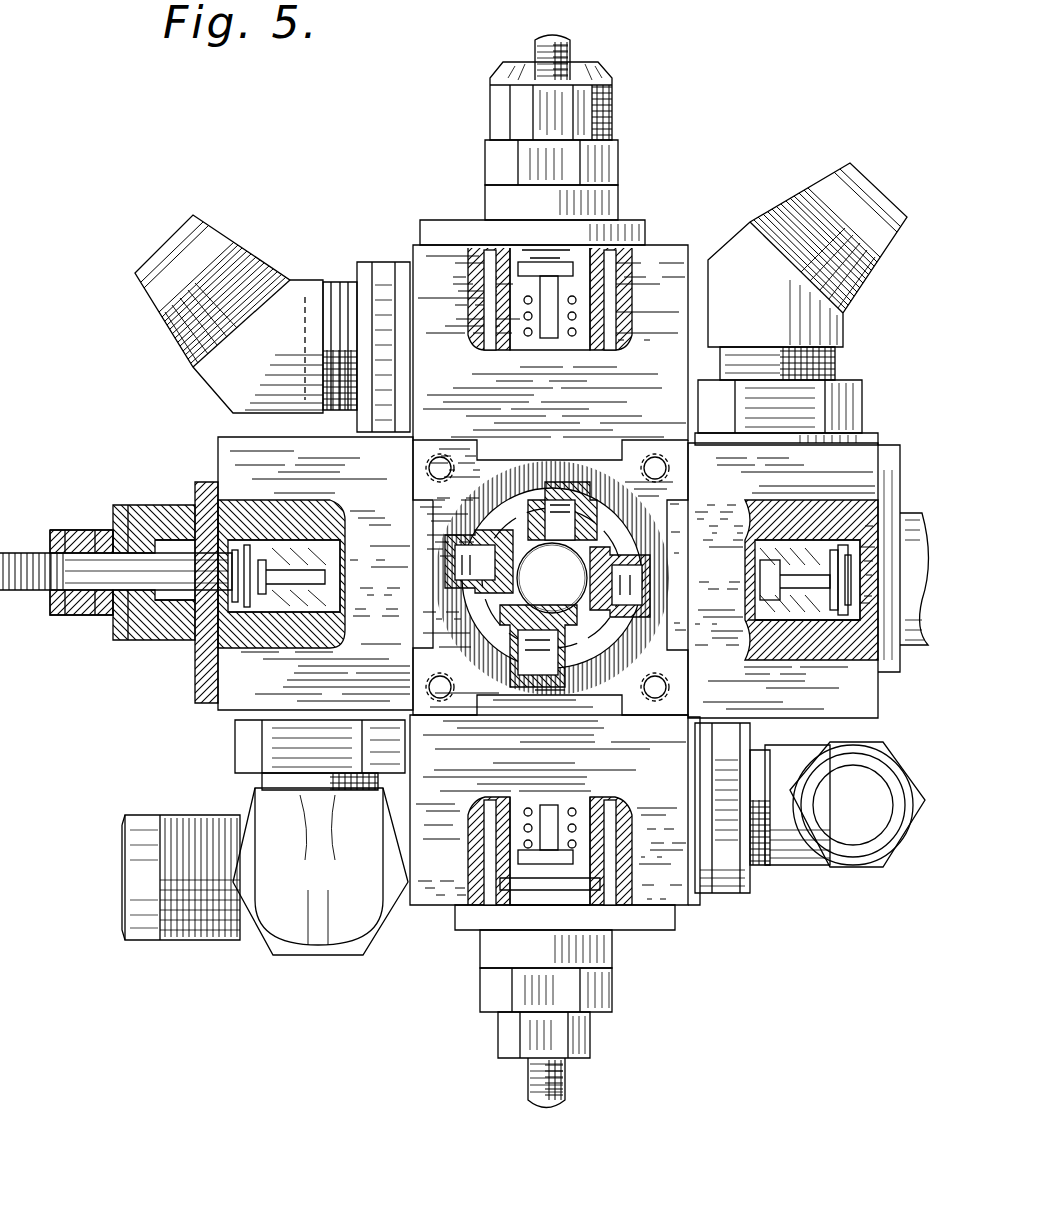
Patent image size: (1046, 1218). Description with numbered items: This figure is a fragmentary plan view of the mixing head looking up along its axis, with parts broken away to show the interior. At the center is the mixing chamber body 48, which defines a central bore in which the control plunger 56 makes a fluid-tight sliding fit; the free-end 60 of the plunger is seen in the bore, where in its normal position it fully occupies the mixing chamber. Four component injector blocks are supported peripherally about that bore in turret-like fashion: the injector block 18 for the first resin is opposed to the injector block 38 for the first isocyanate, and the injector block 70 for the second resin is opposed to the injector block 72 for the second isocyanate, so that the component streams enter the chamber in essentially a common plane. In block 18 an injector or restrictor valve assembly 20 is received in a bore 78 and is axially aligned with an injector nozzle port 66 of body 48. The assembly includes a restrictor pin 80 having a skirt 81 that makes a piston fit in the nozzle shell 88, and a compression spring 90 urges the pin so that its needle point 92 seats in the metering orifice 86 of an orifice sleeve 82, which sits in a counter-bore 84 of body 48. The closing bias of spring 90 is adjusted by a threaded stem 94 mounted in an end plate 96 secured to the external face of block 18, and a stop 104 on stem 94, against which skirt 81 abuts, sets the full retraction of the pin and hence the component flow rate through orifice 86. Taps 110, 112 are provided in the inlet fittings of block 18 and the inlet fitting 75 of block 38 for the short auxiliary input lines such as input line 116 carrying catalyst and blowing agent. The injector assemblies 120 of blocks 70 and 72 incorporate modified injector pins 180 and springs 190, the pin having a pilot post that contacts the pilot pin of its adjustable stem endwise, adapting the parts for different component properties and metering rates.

The injector block 18 is at (868, 718).
The injector or restrictor valve assembly 20 is at (148, 663).
The injector block 38 is at (232, 700).
The mixing chamber body 48 is at (476, 462).
The control plunger 56 is at (500, 532).
The free-end 60 is at (565, 601).
The injector nozzle port 66 is at (510, 582).
The injector block 70 is at (432, 262).
The injector block 72 is at (433, 905).
The inlet fitting 75 is at (293, 958).
The bore 78 is at (742, 545).
The restrictor pin 80 is at (628, 548).
The skirt 81 is at (778, 625).
The orifice sleeve 82 is at (640, 620).
The counter-bore 84 is at (646, 688).
The metering orifice 86 is at (615, 530).
The nozzle shell 88 is at (832, 532).
The compression spring 90 is at (746, 576).
The needle point 92 is at (630, 566).
The threaded stem 94 is at (567, 1093).
The end plate 96 is at (885, 498).
The stop 104 is at (858, 670).
The tap 110 is at (850, 405).
The tap 112 is at (305, 762).
The input line 116 is at (872, 440).
The injector assembly 120 is at (640, 208).
The injector pin 180 is at (550, 675).
The spring 190 is at (580, 800).